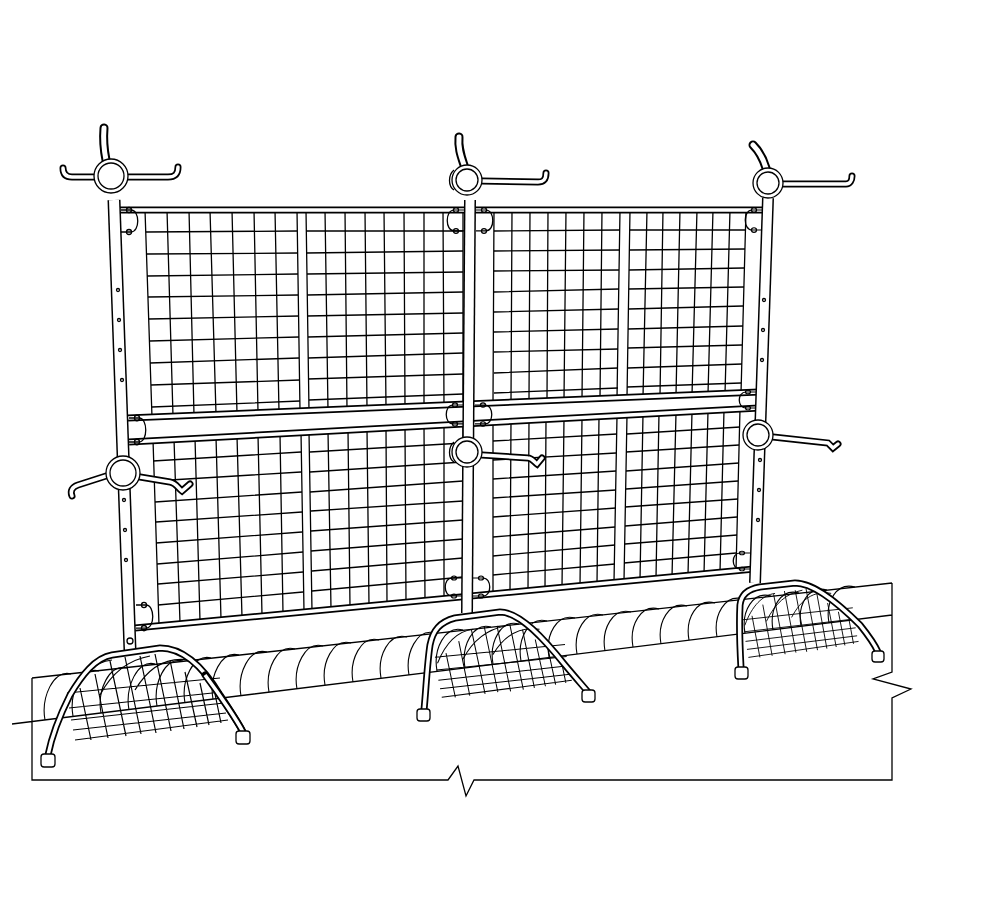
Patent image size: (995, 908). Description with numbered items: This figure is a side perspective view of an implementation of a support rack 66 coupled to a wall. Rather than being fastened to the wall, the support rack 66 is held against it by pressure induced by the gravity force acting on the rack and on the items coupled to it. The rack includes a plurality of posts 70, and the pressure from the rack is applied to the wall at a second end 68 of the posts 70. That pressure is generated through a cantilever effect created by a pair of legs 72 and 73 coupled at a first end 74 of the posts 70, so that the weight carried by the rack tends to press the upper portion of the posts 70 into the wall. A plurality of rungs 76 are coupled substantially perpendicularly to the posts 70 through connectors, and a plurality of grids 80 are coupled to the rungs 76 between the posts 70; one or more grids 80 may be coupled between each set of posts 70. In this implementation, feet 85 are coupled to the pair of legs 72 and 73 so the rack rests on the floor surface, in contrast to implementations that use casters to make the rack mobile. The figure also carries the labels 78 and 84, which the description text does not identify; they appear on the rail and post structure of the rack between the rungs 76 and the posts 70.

The support rack 66 is at (109, 55).
The second end 68 is at (108, 130).
The posts 70 is at (110, 288).
The leg 72 is at (57, 752).
The leg 73 is at (245, 725).
The first end 74 is at (126, 645).
The rungs 76 is at (375, 208).
The middle rail 78 is at (117, 432).
The grids 80 is at (160, 330).
The right upright post 84 is at (776, 272).
The feet 85 is at (597, 697).